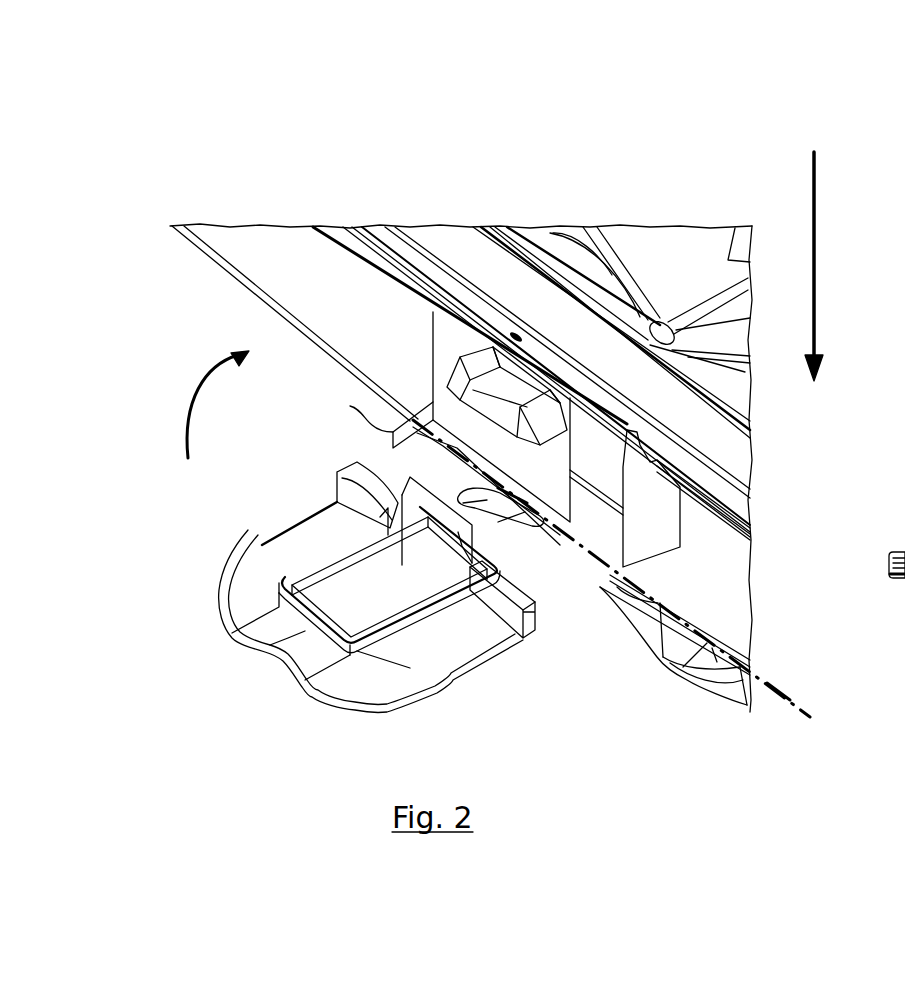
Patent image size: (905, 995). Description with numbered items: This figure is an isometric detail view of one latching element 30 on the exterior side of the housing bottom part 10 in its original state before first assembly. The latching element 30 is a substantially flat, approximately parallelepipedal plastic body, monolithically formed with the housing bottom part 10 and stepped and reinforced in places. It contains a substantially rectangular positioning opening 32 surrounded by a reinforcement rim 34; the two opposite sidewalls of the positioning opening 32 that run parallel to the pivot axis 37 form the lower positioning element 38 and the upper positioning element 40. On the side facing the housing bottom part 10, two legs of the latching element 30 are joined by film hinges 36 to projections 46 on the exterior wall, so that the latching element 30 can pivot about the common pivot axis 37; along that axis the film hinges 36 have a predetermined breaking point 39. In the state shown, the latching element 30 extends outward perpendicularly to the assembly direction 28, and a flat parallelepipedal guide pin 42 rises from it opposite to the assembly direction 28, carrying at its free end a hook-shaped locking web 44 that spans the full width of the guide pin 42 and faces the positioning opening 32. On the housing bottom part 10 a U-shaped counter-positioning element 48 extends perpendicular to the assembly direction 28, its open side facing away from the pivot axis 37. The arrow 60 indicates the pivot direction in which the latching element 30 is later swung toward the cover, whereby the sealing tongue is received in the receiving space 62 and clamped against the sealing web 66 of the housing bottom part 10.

The housing bottom part 10 is at (282, 198).
The assembly direction 28 is at (815, 276).
The latching element 30 is at (255, 652).
The positioning opening 32 is at (270, 548).
The reinforcement rim 34 is at (313, 688).
The film hinge 36 is at (393, 437).
The pivot axis 37 is at (788, 699).
The lower positioning element 38 is at (426, 560).
The predetermined breaking point 39 is at (395, 414).
The upper positioning element 40 is at (280, 650).
The guide pin 42 is at (333, 503).
The locking web 44 is at (350, 468).
The projection 46 is at (445, 353).
The counter-positioning element 48 is at (340, 357).
The pivot direction 60 is at (216, 363).
The receiving space 62 is at (405, 247).
The sealing web 66 is at (502, 237).